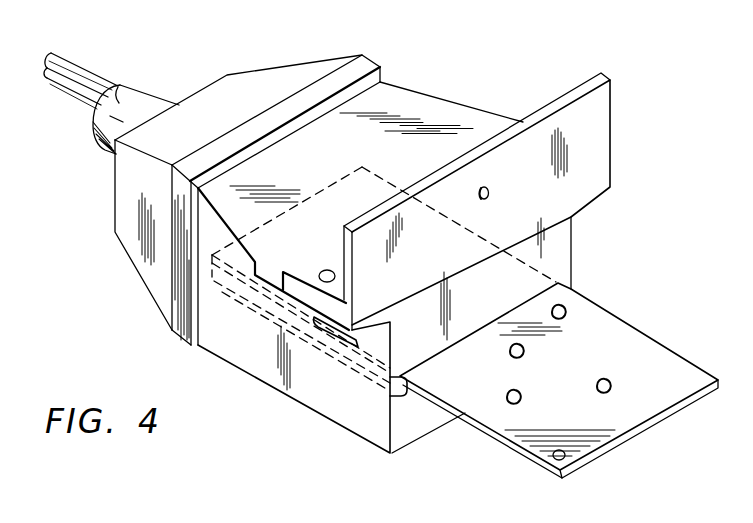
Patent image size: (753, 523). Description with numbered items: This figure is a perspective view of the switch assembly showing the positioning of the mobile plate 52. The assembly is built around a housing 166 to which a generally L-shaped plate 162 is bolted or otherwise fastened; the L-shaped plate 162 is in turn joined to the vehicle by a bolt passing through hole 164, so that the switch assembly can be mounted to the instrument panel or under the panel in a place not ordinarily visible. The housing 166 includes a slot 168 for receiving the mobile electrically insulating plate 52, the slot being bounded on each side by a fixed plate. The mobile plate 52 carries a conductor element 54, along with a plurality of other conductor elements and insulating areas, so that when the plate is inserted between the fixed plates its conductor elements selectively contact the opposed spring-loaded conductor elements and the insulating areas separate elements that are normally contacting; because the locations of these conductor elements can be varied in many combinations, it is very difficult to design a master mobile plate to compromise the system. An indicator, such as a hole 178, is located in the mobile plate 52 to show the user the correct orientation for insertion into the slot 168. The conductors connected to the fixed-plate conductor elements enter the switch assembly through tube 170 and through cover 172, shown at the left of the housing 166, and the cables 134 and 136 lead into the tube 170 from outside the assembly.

The mobile electrically insulating plate 52 is at (638, 360).
The conductor element 54 is at (527, 349).
The cable 134 is at (66, 82).
The cable 136 is at (79, 67).
The L-shaped plate 162 is at (598, 124).
The hole 164 is at (491, 194).
The housing 166 is at (410, 100).
The slot 168 is at (403, 390).
The tube 170 is at (110, 127).
The cover 172 is at (147, 258).
The hole 178 is at (553, 461).